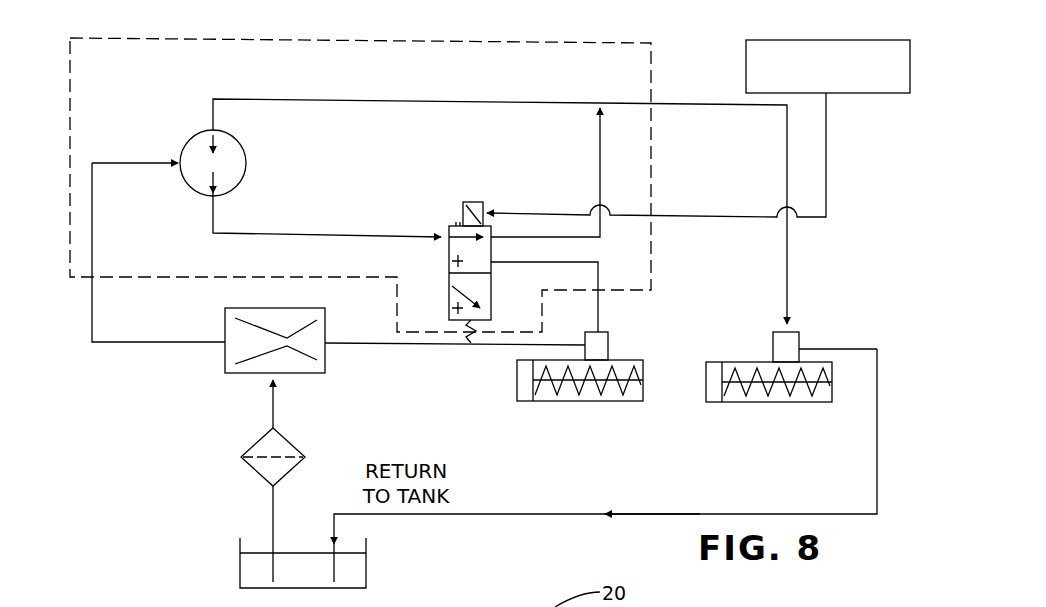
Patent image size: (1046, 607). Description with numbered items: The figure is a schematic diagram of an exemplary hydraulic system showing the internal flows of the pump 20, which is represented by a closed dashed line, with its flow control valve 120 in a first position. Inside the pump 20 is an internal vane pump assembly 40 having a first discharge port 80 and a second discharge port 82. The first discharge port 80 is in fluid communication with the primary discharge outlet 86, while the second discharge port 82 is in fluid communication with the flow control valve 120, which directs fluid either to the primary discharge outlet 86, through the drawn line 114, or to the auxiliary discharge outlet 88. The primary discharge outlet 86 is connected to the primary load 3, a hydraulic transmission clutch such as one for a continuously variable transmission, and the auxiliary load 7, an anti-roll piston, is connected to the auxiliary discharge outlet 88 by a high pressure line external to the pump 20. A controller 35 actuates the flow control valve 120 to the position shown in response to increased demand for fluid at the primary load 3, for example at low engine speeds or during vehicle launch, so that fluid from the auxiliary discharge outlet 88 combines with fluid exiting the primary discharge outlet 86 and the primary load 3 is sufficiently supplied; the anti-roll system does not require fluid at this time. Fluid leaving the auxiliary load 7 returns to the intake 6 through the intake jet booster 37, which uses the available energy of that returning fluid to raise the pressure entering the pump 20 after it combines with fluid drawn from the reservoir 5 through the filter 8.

The pump 20 is at (562, 43).
The internal vane pump assembly 40 is at (186, 139).
The first discharge port 80 is at (394, 103).
The second discharge port 82 is at (242, 237).
The primary discharge outlet 86 is at (684, 104).
The valve outlet line to primary discharge line 114 is at (600, 148).
The flow control valve 120 is at (458, 224).
The controller 35 is at (877, 93).
The auxiliary discharge outlet 88 is at (598, 312).
The intake jet booster 37 is at (225, 357).
The intake 6 is at (90, 308).
The filter 8 is at (250, 446).
The reservoir 5 is at (240, 577).
The auxiliary load 7 is at (517, 390).
The primary load 3 is at (708, 390).